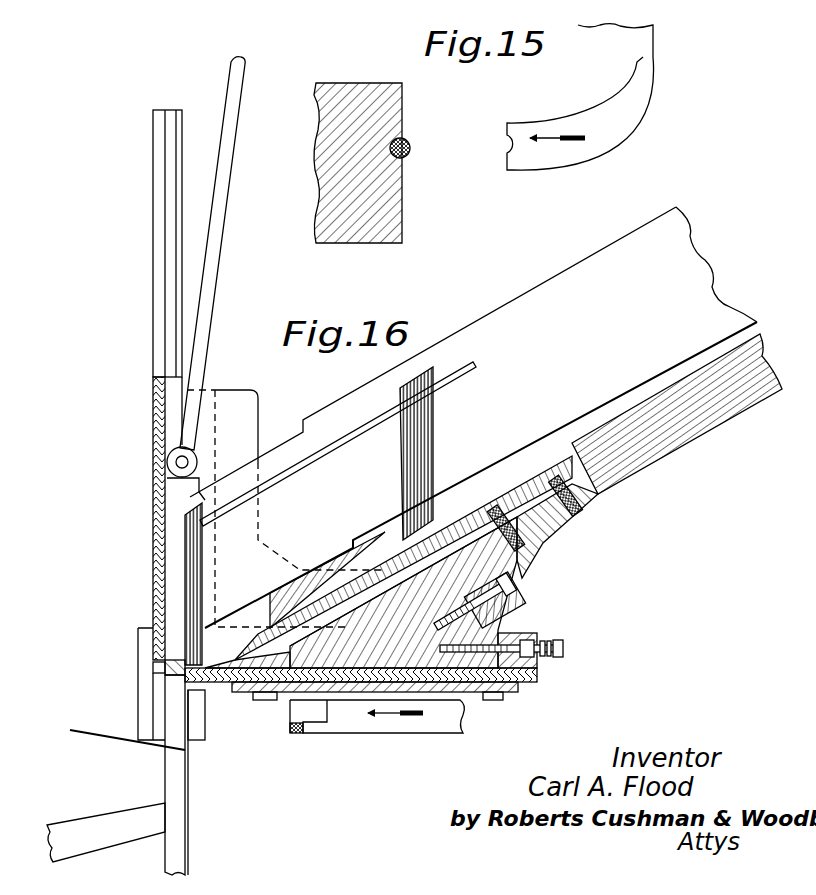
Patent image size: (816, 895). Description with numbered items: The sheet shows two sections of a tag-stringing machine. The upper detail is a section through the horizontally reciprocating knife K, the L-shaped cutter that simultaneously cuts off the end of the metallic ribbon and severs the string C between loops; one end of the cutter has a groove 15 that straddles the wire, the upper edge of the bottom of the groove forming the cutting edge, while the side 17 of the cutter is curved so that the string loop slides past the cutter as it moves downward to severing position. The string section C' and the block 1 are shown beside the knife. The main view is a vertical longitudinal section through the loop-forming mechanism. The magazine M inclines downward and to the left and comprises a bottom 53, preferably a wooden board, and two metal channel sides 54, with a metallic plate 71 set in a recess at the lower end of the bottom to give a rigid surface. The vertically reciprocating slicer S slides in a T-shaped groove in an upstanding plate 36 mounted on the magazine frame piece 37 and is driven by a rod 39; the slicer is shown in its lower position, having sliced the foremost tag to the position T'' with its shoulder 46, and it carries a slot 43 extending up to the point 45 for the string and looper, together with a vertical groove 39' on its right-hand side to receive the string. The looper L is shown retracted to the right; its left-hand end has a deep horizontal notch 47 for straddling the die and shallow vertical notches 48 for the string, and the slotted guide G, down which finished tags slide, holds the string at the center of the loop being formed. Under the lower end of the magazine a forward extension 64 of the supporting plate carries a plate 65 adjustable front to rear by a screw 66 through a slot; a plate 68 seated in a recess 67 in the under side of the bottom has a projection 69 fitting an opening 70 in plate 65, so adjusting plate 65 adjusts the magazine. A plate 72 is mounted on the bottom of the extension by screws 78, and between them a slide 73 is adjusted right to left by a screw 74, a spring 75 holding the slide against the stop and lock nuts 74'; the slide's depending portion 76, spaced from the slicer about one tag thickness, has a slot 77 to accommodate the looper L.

In FIG. 15, the workpiece block 1 is at (339, 90).
In FIG. 15, the string C is at (414, 176).
In FIG. 16, the string C is at (127, 748).
In FIG. 15, the wire section C' is at (413, 115).
In FIG. 15, the knife K is at (640, 66).
In FIG. 15, the groove 15 is at (512, 148).
In FIG. 15, the side of the cutter 17 is at (603, 138).
In FIG. 16, the magazine M is at (498, 306).
In FIG. 16, the sides 54 is at (712, 274).
In FIG. 16, the bottom 53 is at (722, 418).
In FIG. 16, the upstanding plate 36 is at (153, 176).
In FIG. 16, the rod 39 is at (218, 278).
In FIG. 16, the groove 39' is at (219, 584).
In FIG. 16, the magazine frame piece 37 is at (255, 394).
In FIG. 16, the slicer S is at (153, 540).
In FIG. 16, the metallic plate 71 is at (505, 483).
In FIG. 16, the projection 69 is at (475, 508).
In FIG. 16, the plate 68 is at (593, 502).
In FIG. 16, the recess 67 is at (627, 478).
In FIG. 16, the screw 66 is at (510, 588).
In FIG. 16, the opening 70 is at (510, 603).
In FIG. 16, the plate 65 is at (513, 623).
In FIG. 16, the forward extension 64 is at (410, 655).
In FIG. 16, the slide 73 is at (528, 672).
In FIG. 16, the screw 74 is at (522, 645).
In FIG. 16, the lock nuts 74' is at (531, 635).
In FIG. 16, the spring 75 is at (545, 640).
In FIG. 16, the plate 72 is at (520, 687).
In FIG. 16, the screws 78 is at (497, 702).
In FIG. 16, the looper L is at (356, 733).
In FIG. 16, the vertical notches 48 is at (295, 702).
In FIG. 16, the horizontal notch 47 is at (305, 733).
In FIG. 16, the point 45 is at (165, 678).
In FIG. 16, the shoulder 46 is at (192, 740).
In FIG. 16, the slot 77 is at (200, 742).
In FIG. 16, the depending portion 76 is at (205, 680).
In FIG. 16, the slot 43 is at (176, 818).
In FIG. 16, the table edge T'' is at (205, 782).
In FIG. 16, the slotted guide G is at (112, 812).